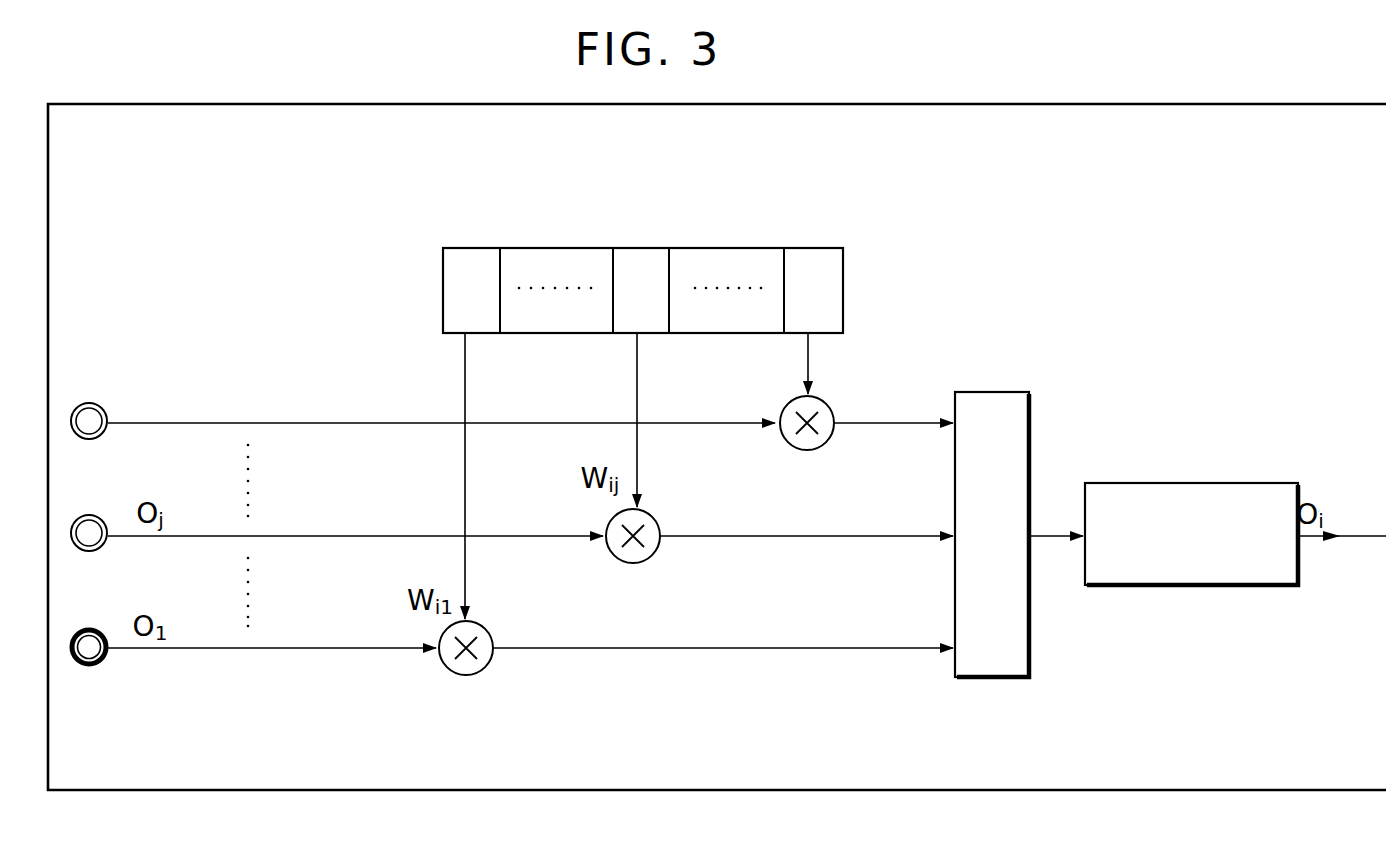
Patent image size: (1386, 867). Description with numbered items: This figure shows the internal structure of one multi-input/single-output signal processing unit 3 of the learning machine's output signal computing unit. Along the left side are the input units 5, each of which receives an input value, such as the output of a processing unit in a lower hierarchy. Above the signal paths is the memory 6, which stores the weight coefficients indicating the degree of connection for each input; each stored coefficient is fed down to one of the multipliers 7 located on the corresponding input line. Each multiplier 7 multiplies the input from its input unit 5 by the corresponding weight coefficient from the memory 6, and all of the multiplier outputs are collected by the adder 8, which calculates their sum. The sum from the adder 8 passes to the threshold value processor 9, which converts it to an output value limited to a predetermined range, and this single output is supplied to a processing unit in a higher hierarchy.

The multi-input/single-output signal processing unit 3 is at (1030, 790).
The input unit 5 is at (96, 664).
The memory 6 is at (843, 258).
The multiplier 7 is at (483, 668).
The adder 8 is at (1010, 392).
The threshold value processor 9 is at (1233, 483).